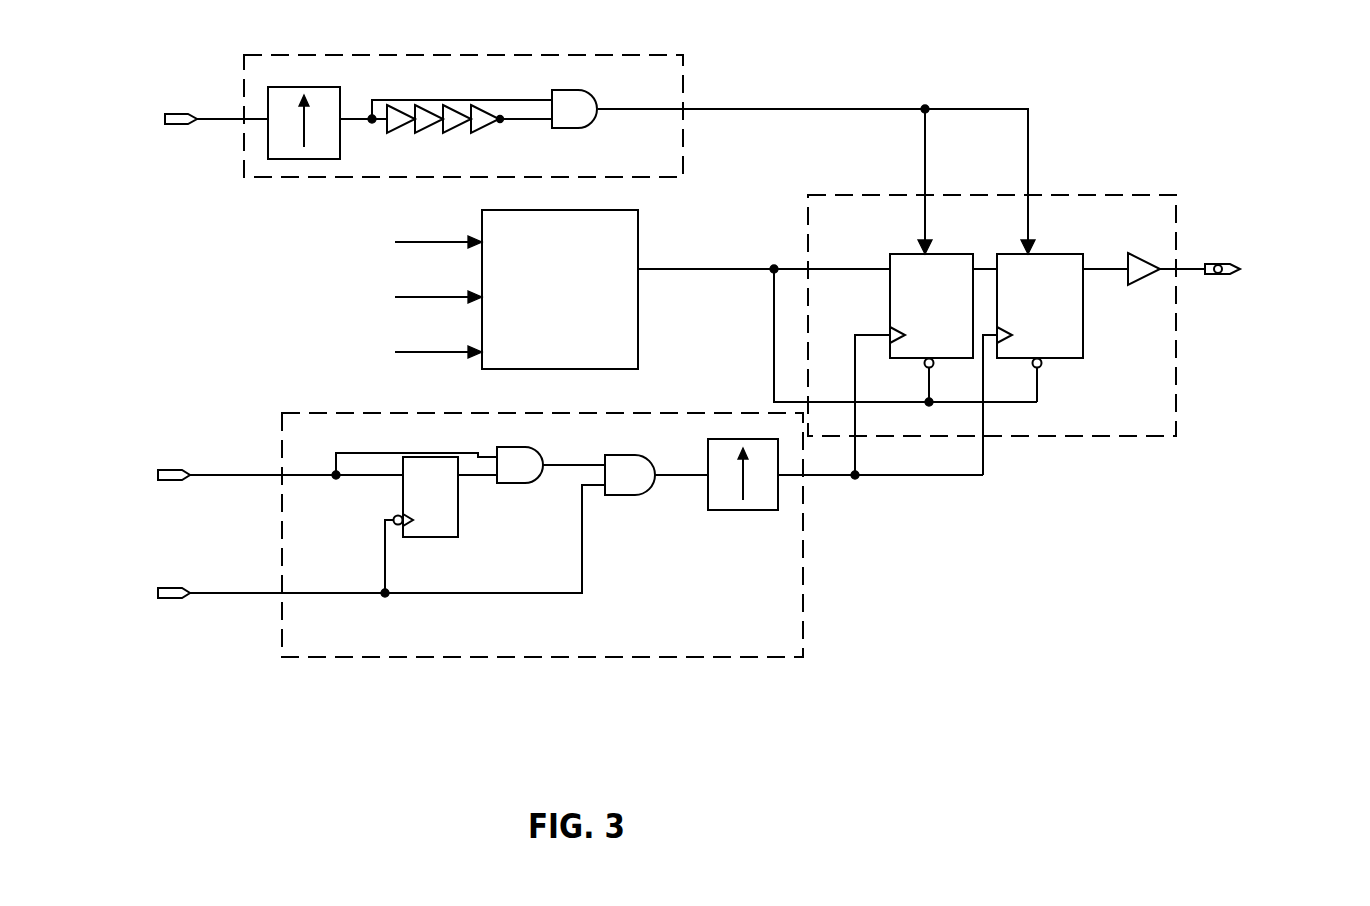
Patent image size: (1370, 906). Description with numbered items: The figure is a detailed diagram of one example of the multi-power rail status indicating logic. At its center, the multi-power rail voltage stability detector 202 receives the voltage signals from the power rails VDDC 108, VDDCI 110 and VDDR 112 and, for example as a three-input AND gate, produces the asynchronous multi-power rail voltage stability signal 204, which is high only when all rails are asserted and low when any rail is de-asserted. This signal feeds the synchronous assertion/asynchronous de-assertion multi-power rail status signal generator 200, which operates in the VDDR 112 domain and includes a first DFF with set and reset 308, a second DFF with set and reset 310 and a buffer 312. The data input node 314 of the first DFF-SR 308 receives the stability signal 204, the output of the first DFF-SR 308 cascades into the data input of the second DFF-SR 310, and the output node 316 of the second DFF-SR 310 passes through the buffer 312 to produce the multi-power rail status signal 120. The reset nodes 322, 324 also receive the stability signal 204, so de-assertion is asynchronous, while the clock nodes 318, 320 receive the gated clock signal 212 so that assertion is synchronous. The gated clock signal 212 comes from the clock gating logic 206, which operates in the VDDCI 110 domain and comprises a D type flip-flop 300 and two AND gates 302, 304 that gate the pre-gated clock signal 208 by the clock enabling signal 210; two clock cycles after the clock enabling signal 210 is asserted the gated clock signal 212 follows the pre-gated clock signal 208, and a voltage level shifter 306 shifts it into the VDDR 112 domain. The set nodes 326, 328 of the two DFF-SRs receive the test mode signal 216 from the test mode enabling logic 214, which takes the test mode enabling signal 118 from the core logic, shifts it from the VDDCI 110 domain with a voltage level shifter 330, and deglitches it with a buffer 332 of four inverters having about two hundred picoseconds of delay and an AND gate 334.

The VDDC 108 is at (445, 352).
The VDDCI 110 is at (445, 242).
The VDDR 112 is at (445, 297).
The test mode enabling signal 118 is at (175, 130).
The multi-power rail status signal 120 is at (1210, 280).
The synchronous assertion/asynchronous de-assertion multi-power rail status signal g 200 is at (1101, 195).
The multi-power rail voltage stability detector 202 is at (641, 215).
The asynchronous multi-power rail voltage stability signal 204 is at (771, 275).
The clock gating logic 206 is at (558, 657).
The pre-gated clock signal 208 is at (170, 586).
The clock enabling signal 210 is at (170, 468).
The gated clock signal 212 is at (922, 475).
The test mode enabling logic 214 is at (590, 55).
The test mode signal 216 is at (856, 108).
The D type flip-flop 300 is at (437, 457).
The AND gate 302 is at (527, 483).
The AND gate 304 is at (638, 455).
The voltage level shifter 306 is at (742, 510).
The first DFF with set and reset 308 is at (906, 246).
The second DFF with set and reset 310 is at (1078, 377).
The buffer 312 is at (1150, 285).
The data input node 314 is at (890, 266).
The output node 316 is at (1086, 260).
The clock node 318 is at (890, 333).
The clock node 320 is at (997, 333).
The reset node 322 is at (929, 368).
The reset node 324 is at (1037, 368).
The set node 326 is at (932, 252).
The set node 328 is at (1036, 252).
The voltage level shifter 330 is at (304, 160).
The buffer 332 is at (440, 139).
The AND gate 334 is at (572, 128).